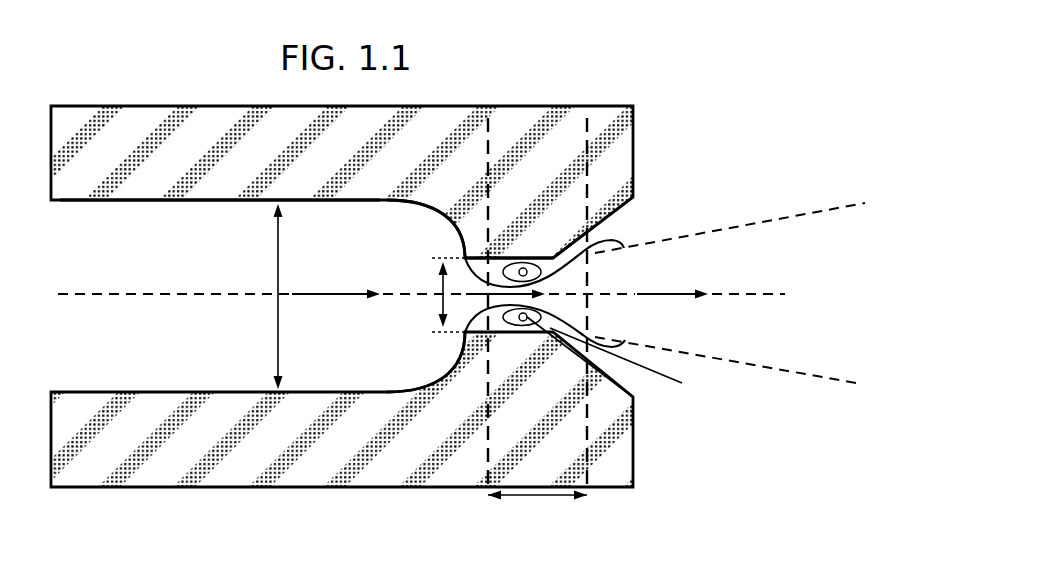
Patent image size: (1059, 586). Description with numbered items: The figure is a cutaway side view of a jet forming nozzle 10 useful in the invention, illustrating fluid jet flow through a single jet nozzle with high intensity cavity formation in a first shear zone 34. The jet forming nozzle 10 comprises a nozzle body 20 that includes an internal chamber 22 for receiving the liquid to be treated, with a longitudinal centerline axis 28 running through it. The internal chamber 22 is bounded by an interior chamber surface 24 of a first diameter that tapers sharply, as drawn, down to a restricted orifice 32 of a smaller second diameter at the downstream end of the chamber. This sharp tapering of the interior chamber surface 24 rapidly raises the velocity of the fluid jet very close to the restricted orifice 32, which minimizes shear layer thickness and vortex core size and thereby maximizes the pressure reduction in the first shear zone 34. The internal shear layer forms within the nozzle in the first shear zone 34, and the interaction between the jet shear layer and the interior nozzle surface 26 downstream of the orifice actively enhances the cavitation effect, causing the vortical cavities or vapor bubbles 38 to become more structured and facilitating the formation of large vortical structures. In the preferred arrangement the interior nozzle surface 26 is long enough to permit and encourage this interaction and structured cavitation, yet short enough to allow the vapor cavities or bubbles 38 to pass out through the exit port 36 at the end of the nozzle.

The jet forming nozzle 10 is at (275, 506).
The nozzle body 20 is at (182, 101).
The internal chamber 22 is at (297, 296).
The interior chamber surface 24 is at (448, 222).
The interior nozzle surface 26 is at (130, 203).
The longitudinal centerline axis 28 is at (108, 295).
The restricted orifice 32 is at (466, 333).
The first shear zone 34 is at (513, 497).
The exit port 36 is at (622, 206).
The vapor cavities or bubbles 38 is at (527, 272).